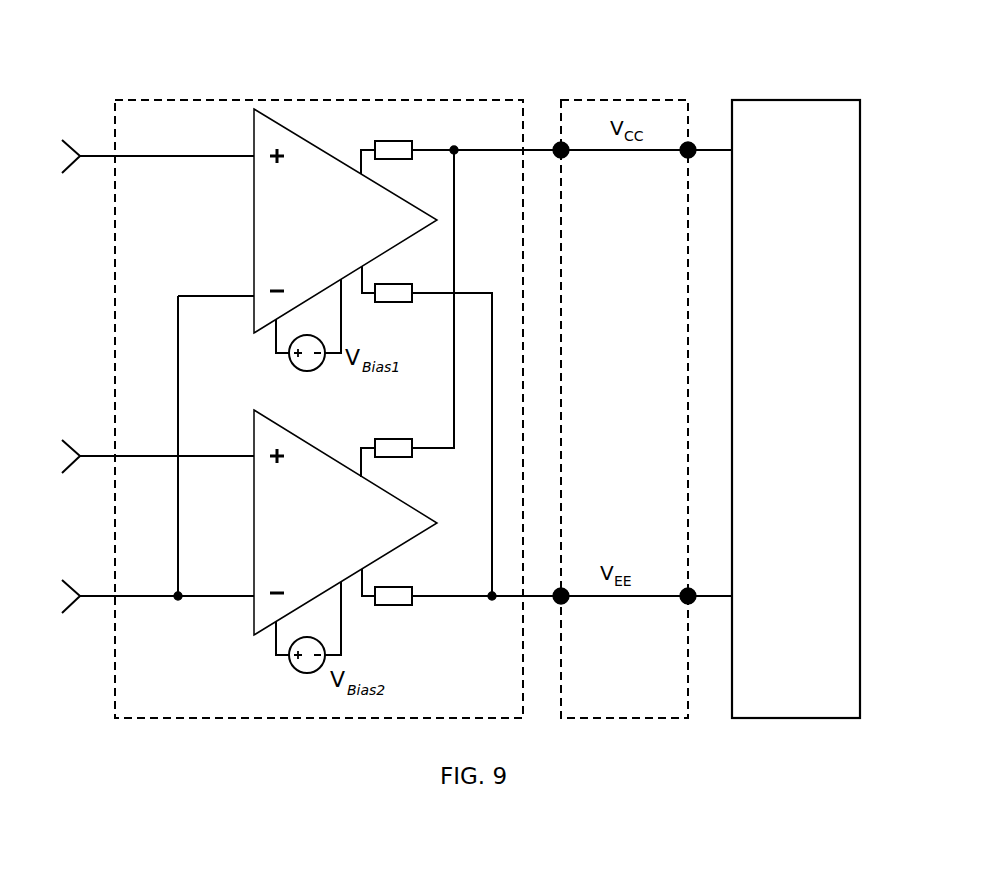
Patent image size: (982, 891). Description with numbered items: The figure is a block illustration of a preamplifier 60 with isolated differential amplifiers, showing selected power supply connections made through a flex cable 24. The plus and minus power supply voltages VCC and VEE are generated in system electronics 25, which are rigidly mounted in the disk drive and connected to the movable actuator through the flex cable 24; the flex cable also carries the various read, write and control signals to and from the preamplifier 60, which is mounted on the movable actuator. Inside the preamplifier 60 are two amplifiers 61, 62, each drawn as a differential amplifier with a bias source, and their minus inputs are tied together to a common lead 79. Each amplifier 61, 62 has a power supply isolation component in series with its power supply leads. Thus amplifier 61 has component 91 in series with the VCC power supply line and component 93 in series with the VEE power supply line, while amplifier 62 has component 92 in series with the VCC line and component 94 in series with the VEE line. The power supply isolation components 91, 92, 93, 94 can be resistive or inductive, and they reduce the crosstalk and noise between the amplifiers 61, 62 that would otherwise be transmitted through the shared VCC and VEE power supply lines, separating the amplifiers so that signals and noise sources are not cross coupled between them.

The preamplifier 60 is at (218, 100).
The amplifier 61 is at (254, 228).
The amplifier 62 is at (254, 547).
The common lead 79 is at (142, 600).
The power supply isolation component 91 is at (395, 140).
The power supply isolation component 92 is at (393, 438).
The power supply isolation component 93 is at (395, 303).
The power supply isolation component 94 is at (393, 605).
The flex cable 24 is at (597, 100).
The system electronics 25 is at (776, 100).